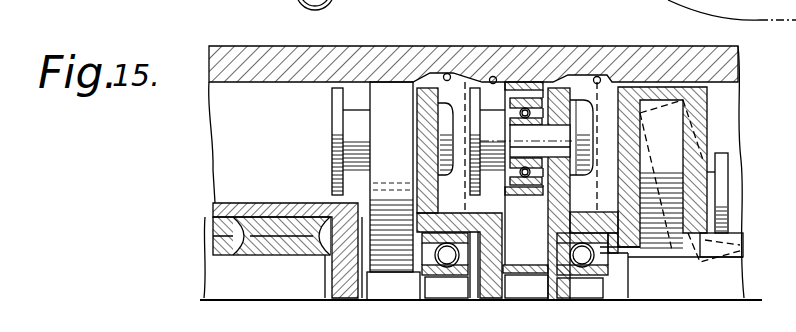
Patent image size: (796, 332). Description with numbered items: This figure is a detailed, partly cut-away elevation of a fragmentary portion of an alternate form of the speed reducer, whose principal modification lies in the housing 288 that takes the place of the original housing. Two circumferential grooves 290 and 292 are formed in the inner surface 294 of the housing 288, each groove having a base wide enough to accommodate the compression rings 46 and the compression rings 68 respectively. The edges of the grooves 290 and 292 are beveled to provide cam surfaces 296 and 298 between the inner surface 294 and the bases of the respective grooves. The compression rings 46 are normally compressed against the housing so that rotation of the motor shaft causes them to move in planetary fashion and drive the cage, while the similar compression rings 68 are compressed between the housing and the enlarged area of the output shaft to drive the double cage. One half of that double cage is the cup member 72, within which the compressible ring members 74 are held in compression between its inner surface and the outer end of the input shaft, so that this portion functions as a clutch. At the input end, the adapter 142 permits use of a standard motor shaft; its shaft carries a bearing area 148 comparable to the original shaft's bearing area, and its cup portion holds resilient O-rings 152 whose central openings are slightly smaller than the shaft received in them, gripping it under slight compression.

The compression rings 46 is at (367, 93).
The compression rings 68 is at (527, 266).
The cup member 72 is at (668, 85).
The compressible ring members 74 is at (685, 131).
The adapter 142 is at (292, 203).
The bearing area 148 is at (388, 272).
The O-rings 152 is at (263, 228).
The housing 288 is at (549, 46).
The circumferential groove 290 is at (452, 72).
The circumferential groove 292 is at (602, 80).
The inner surface 294 is at (498, 80).
The cam surface 296 is at (430, 77).
The cam surface 298 is at (572, 75).